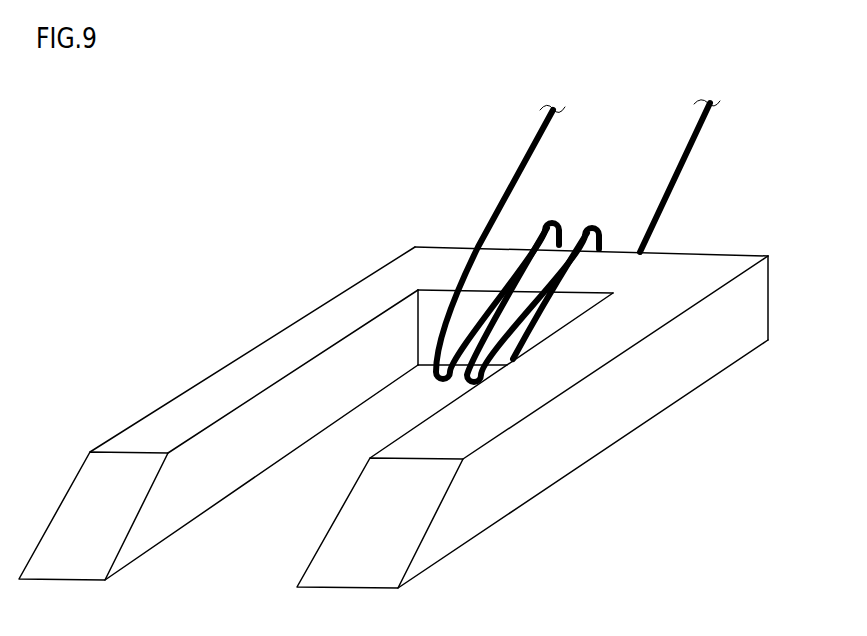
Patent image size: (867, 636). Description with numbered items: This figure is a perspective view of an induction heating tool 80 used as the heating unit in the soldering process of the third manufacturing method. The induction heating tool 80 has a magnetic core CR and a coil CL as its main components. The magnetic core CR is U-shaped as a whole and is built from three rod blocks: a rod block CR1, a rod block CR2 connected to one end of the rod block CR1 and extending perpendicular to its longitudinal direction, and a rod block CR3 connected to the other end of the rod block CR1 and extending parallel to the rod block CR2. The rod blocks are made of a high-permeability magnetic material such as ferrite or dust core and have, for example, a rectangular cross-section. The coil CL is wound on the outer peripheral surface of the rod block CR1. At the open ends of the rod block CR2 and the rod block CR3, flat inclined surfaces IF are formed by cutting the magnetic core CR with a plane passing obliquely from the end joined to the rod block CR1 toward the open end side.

The induction heating tool 80 is at (415, 354).
The coil CL is at (570, 241).
The magnetic core CR is at (393, 427).
The rod block CR1 is at (560, 367).
The rod block CR2 is at (583, 422).
The rod block CR3 is at (404, 435).
The inclined surface IF is at (249, 530).